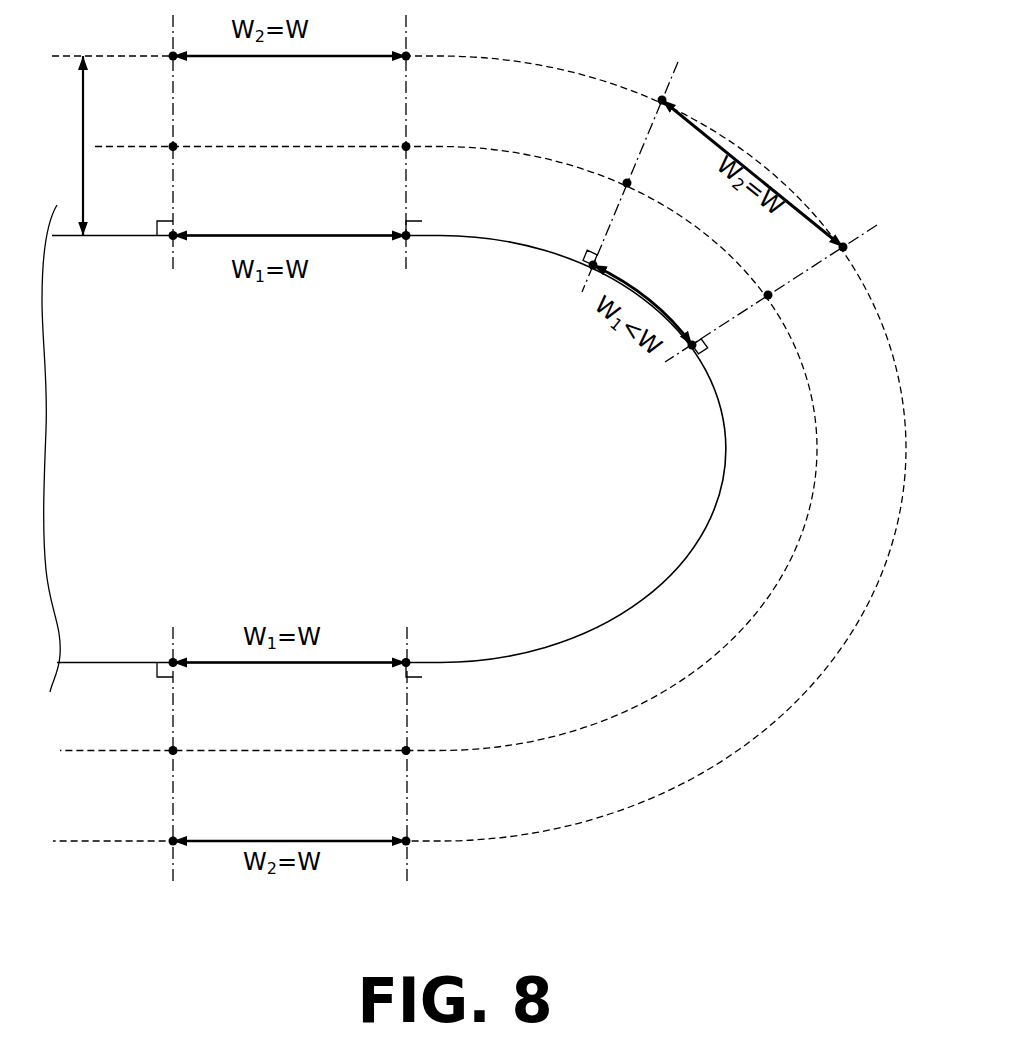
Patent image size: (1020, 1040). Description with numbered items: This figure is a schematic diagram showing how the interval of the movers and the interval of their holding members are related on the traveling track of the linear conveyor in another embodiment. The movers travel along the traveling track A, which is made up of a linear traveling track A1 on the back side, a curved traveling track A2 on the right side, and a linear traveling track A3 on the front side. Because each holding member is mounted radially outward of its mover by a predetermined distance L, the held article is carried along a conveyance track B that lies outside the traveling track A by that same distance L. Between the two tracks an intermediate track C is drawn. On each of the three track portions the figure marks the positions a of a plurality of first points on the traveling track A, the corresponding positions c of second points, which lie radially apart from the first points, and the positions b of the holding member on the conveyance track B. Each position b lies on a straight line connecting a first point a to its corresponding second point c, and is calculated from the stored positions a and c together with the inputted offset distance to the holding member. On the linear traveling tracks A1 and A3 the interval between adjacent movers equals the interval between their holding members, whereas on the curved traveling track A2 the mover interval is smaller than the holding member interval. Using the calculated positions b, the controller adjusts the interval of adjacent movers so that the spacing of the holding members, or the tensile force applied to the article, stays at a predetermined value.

The traveling track A is at (389, 559).
The linear traveling track A1 is at (123, 236).
The curved traveling track A2 is at (726, 453).
The linear traveling track A3 is at (123, 661).
The conveyance track B is at (703, 777).
The intermediate boundary line C is at (540, 738).
The position of first point a is at (440, 446).
The position of holding member b is at (508, 449).
The position of second point c is at (471, 448).
The predetermined distance L is at (66, 146).